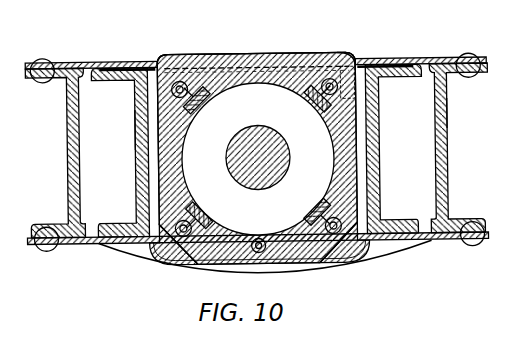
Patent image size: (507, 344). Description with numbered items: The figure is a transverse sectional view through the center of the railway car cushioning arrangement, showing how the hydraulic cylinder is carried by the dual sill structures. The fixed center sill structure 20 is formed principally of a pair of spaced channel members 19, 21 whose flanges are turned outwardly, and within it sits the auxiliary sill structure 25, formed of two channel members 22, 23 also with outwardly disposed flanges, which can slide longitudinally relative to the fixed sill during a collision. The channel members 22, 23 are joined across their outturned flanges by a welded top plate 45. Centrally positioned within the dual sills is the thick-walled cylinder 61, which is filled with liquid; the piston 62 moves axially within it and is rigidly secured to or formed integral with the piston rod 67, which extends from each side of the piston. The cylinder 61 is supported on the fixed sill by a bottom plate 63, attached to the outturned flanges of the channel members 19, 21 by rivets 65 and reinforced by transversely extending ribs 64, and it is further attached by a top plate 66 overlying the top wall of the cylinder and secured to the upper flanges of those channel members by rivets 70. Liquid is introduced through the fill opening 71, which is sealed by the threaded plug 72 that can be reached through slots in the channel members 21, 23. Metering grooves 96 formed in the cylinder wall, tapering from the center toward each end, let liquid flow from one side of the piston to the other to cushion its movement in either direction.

The channel member 19 is at (67, 160).
The center sill structure 20 is at (449, 139).
The channel member 21 is at (449, 176).
The channel member 22 is at (135, 161).
The channel member 23 is at (381, 183).
The auxiliary sill structure 25 is at (141, 130).
The top plate 45 is at (131, 65).
The cylinder 61 is at (333, 135).
The piston 62 is at (263, 118).
The bottom plate 63 is at (322, 265).
The ribs 64 is at (150, 262).
The rivets 65 is at (48, 225).
The top plate 66 is at (249, 53).
The piston rod 67 is at (266, 173).
The rivets 70 is at (60, 51).
The fill opening 71 is at (292, 85).
The threaded plug 72 is at (351, 57).
The metering grooves 96 is at (205, 107).